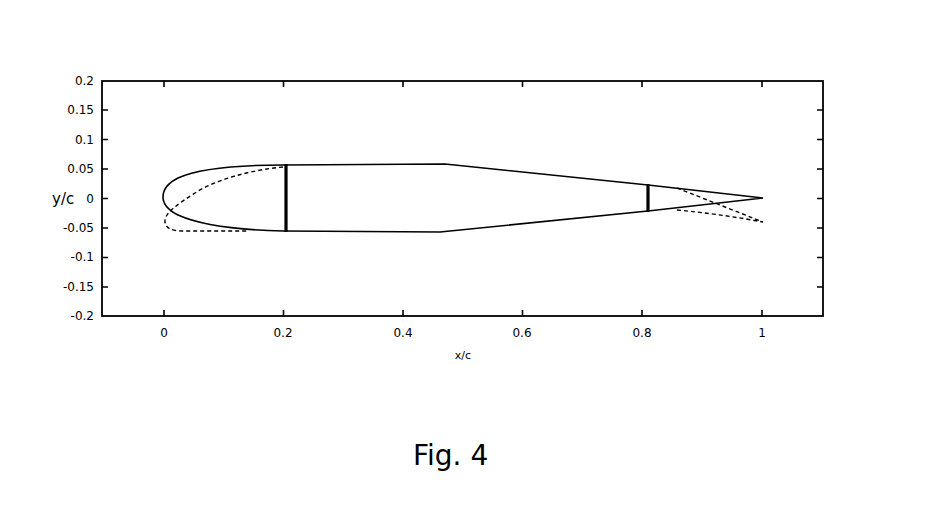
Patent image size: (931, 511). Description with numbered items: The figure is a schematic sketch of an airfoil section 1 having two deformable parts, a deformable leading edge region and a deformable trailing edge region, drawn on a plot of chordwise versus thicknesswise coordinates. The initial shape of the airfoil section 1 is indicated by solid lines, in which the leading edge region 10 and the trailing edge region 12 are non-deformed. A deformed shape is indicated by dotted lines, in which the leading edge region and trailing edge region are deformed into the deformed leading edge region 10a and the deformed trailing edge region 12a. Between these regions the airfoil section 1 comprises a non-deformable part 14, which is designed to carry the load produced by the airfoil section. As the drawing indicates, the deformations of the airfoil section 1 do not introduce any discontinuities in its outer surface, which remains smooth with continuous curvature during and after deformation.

The airfoil section 1 is at (463, 221).
The leading edge region 10 is at (243, 205).
The deformed leading edge region 10a is at (169, 236).
The trailing edge region 12 is at (672, 203).
The deformed trailing edge region 12a is at (739, 228).
The non-deformable part 14 is at (437, 210).